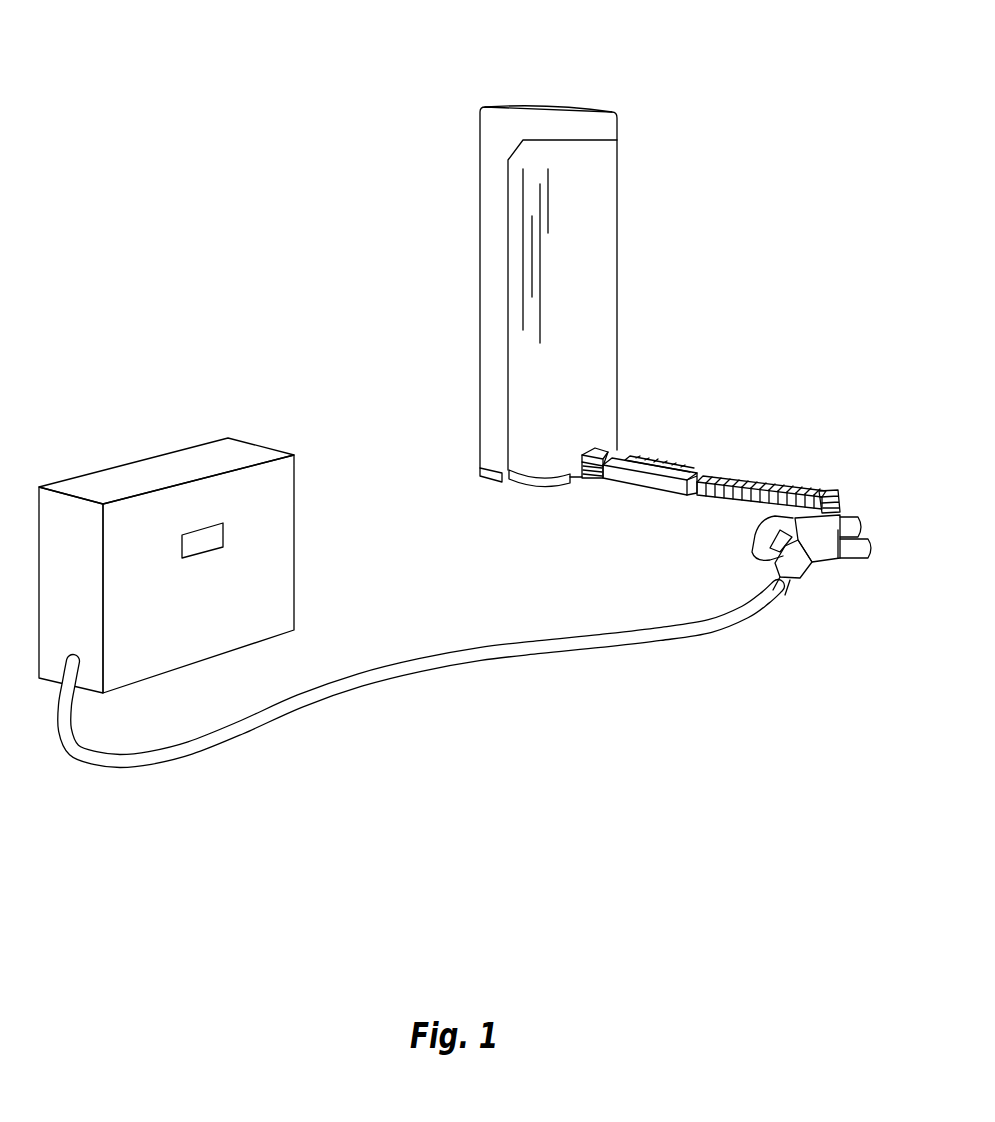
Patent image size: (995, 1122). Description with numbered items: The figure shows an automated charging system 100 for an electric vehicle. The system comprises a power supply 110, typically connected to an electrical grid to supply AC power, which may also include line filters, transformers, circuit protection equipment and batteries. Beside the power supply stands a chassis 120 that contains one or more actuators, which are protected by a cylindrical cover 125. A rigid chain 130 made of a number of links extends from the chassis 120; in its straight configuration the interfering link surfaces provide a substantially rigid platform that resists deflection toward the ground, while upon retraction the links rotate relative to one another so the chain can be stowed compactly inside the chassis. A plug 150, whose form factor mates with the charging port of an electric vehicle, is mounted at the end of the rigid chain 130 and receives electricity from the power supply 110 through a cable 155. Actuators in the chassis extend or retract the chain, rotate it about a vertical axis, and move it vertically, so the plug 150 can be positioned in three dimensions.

The automated charging system 100 is at (730, 70).
The power supply 110 is at (188, 450).
The chassis 120 is at (568, 258).
The cylindrical cover 125 is at (618, 262).
The rigid chain 130 is at (770, 478).
The plug 150 is at (842, 560).
The cable 155 is at (467, 648).